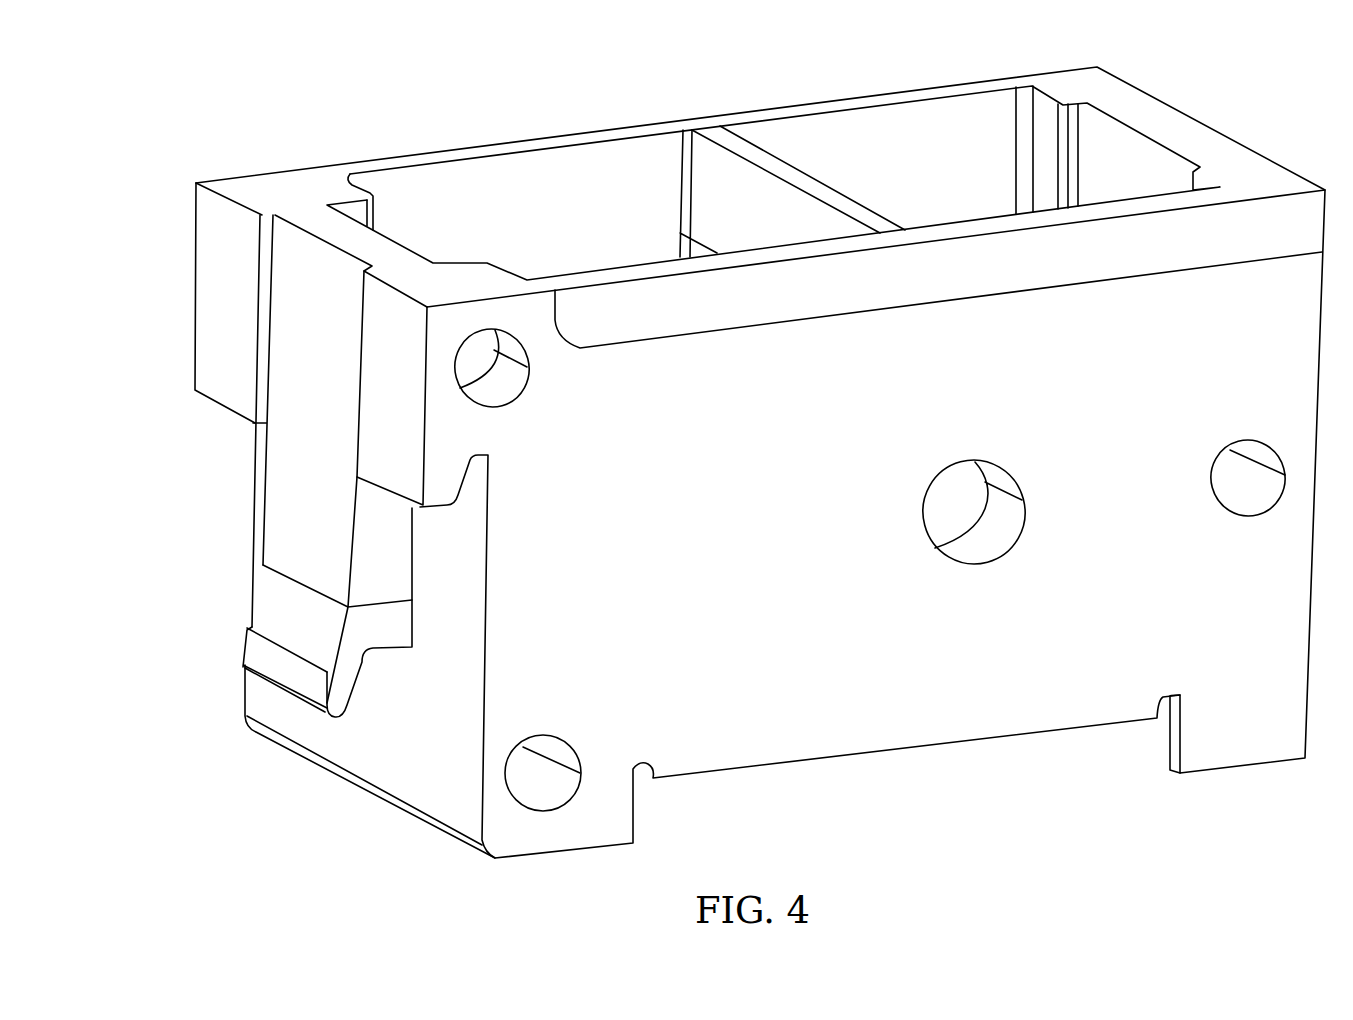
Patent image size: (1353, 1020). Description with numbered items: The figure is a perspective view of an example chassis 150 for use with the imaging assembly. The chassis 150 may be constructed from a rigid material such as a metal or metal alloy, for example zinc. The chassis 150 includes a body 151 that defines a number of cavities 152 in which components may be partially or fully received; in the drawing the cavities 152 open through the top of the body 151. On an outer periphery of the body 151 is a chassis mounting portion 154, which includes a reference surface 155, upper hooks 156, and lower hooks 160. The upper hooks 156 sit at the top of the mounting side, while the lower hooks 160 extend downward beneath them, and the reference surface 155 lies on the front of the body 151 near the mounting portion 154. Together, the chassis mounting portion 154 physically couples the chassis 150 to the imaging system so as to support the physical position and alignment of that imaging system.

The chassis 150 is at (497, 143).
The body 151 is at (976, 391).
The cavities 152 is at (621, 162).
The chassis mounting portion 154 is at (252, 404).
The reference surface 155 is at (468, 732).
The upper hooks 156 is at (390, 320).
The lower hooks 160 is at (298, 493).